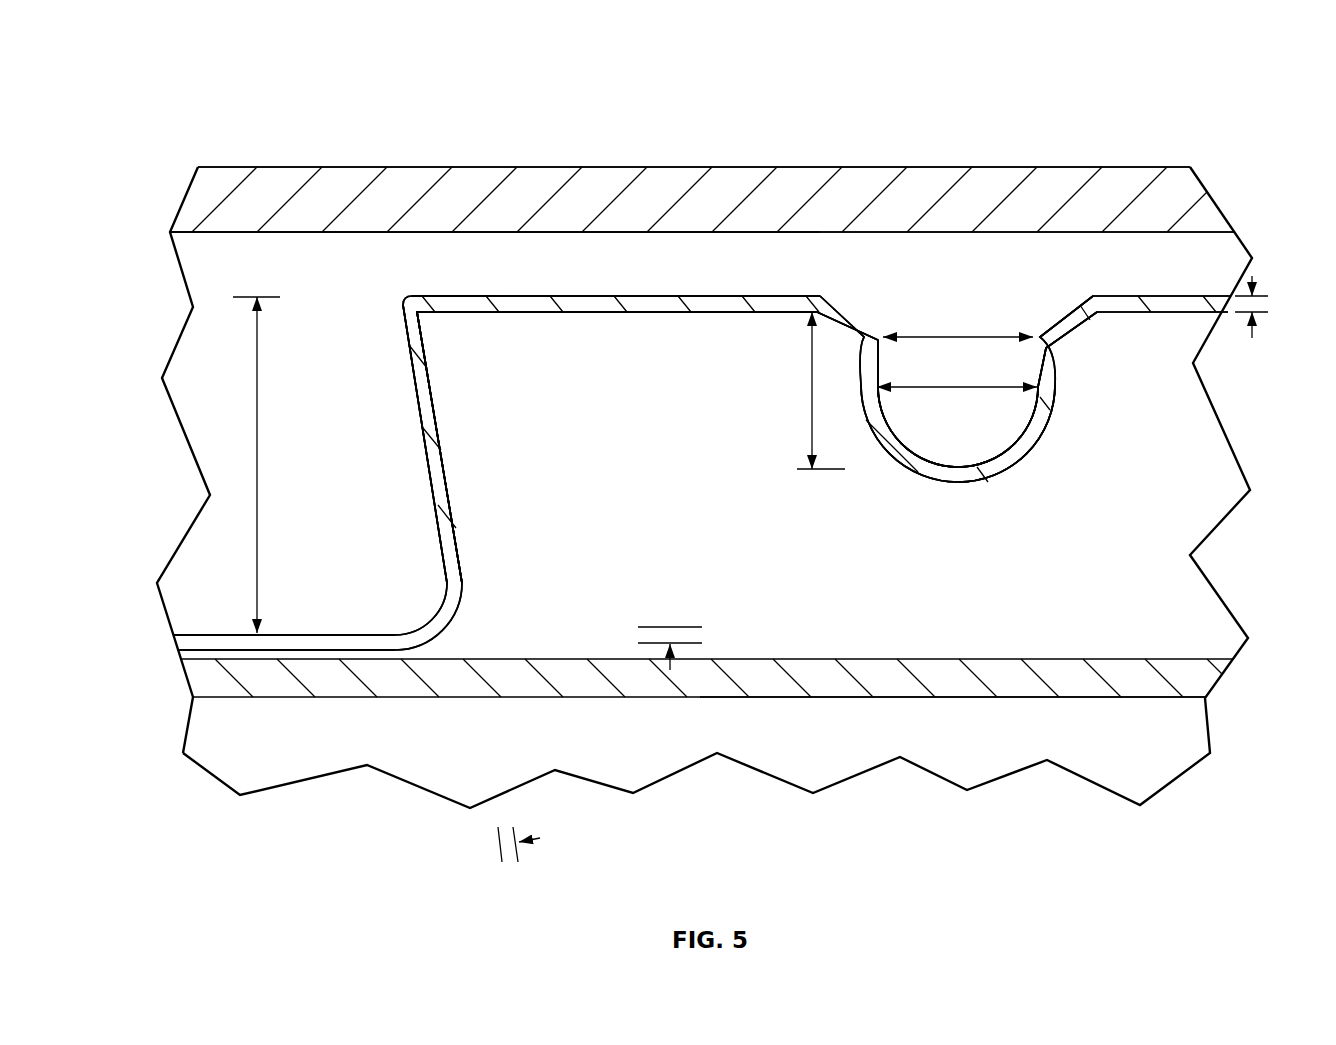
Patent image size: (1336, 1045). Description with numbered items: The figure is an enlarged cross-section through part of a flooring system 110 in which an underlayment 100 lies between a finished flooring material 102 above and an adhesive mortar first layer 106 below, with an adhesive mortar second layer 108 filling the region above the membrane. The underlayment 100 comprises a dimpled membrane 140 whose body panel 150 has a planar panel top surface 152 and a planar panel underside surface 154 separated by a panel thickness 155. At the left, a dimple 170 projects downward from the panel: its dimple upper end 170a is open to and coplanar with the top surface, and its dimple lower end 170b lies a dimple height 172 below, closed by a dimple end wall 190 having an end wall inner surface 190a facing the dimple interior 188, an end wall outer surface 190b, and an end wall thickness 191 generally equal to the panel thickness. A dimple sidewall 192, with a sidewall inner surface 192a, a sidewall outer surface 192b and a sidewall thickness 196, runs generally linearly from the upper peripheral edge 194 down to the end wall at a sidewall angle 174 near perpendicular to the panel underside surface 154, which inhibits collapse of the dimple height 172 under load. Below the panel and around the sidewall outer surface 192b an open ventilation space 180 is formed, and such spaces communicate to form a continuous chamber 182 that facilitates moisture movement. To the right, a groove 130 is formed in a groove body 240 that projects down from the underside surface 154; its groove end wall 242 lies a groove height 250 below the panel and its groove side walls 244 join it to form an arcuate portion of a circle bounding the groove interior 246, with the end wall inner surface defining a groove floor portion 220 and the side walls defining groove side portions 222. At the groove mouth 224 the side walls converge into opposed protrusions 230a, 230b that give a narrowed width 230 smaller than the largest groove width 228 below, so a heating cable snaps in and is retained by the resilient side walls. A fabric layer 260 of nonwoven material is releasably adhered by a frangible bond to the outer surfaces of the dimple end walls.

The underlayment 100 is at (398, 341).
The flooring material 102 is at (637, 167).
The adhesive mortar first layer 106 is at (410, 765).
The adhesive mortar second layer 108 is at (990, 358).
The flooring system 110 is at (292, 100).
The groove 130 is at (1060, 435).
The dimpled membrane 140 is at (442, 293).
The body panel 150 is at (717, 310).
The panel top surface 152 is at (674, 288).
The panel underside surface 154 is at (860, 350).
The panel thickness 155 is at (1252, 276).
The dimple 170 is at (210, 263).
The dimple upper end 170a is at (196, 295).
The dimple lower end 170b is at (193, 603).
The dimple height 172 is at (257, 360).
The sidewall angle 174 is at (440, 395).
The open ventilation space 180 is at (937, 618).
The continuous chamber 182 is at (728, 447).
The dimple interior 188 is at (423, 584).
The dimple end wall 190 is at (297, 633).
The end wall inner surface 190a is at (340, 632).
The end wall outer surface 190b is at (297, 653).
The end wall thickness 191 is at (670, 626).
The dimple sidewall 192 is at (457, 513).
The sidewall inner surface 192a is at (418, 441).
The sidewall outer surface 192b is at (448, 447).
The upper peripheral edge 194 is at (433, 323).
The sidewall thickness 196 is at (497, 846).
The groove floor portion 220 is at (962, 452).
The groove side portions 222 is at (887, 417).
The groove mouth 224 is at (1040, 331).
The largest groove width 228 is at (1053, 403).
The narrowed width 230 is at (990, 270).
The protrusion 230a is at (923, 337).
The protrusion 230b is at (1056, 345).
The groove body 240 is at (923, 495).
The groove end wall 242 is at (975, 470).
The groove side walls 244 is at (1058, 358).
The groove interior 246 is at (1034, 318).
The groove height 250 is at (808, 428).
The fabric layer 260 is at (1050, 659).